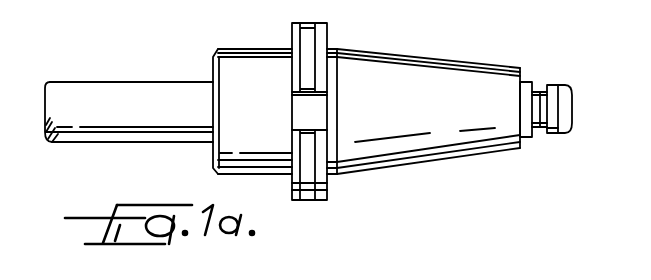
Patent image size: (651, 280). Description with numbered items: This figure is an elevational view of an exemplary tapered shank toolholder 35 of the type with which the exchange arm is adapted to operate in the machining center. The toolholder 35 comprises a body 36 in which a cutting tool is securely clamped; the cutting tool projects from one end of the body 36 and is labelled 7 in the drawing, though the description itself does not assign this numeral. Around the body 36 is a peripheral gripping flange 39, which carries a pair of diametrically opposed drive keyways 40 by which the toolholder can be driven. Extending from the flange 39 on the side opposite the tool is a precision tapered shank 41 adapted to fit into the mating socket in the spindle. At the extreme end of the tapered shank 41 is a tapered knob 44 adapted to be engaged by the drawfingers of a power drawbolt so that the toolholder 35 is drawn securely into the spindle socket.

The tool shank 7 is at (63, 87).
The toolholder 35 is at (209, 67).
The body 36 is at (252, 65).
The peripheral gripping flange 39 is at (329, 26).
The drive keyways 40 is at (321, 130).
The precision tapered shank 41 is at (402, 168).
The tapered knob 44 is at (572, 109).